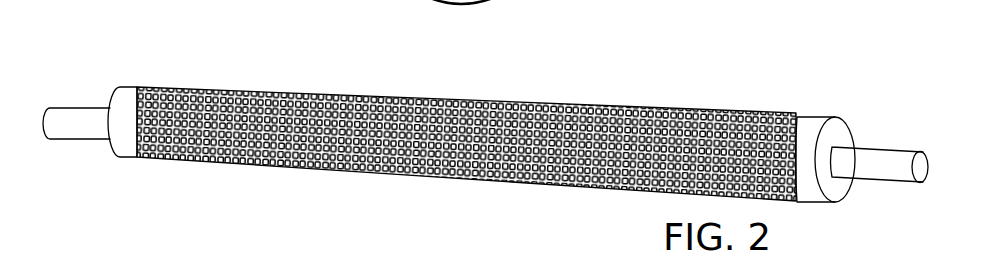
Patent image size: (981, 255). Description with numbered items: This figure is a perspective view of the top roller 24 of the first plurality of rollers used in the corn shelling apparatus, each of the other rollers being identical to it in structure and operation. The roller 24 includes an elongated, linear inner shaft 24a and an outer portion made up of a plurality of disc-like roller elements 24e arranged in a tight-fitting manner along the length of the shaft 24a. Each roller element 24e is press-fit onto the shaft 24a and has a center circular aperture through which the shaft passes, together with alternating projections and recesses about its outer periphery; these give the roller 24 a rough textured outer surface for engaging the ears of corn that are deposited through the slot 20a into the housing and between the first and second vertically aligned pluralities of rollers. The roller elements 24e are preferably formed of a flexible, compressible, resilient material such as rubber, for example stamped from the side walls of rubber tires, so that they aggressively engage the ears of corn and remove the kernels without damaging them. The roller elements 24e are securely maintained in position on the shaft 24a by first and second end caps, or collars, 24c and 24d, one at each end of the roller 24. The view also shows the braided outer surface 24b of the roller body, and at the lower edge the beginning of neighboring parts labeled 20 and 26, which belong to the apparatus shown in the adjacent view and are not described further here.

The top roller 24 is at (481, 127).
The inner shaft 24a is at (87, 120).
The braided sheath 24b is at (380, 86).
The first end cap 24c is at (125, 140).
The second end cap 24d is at (814, 125).
The roller elements 24e is at (596, 105).
The connector 20 is at (427, 246).
The slot 20a is at (340, 254).
The housing 26 is at (224, 249).